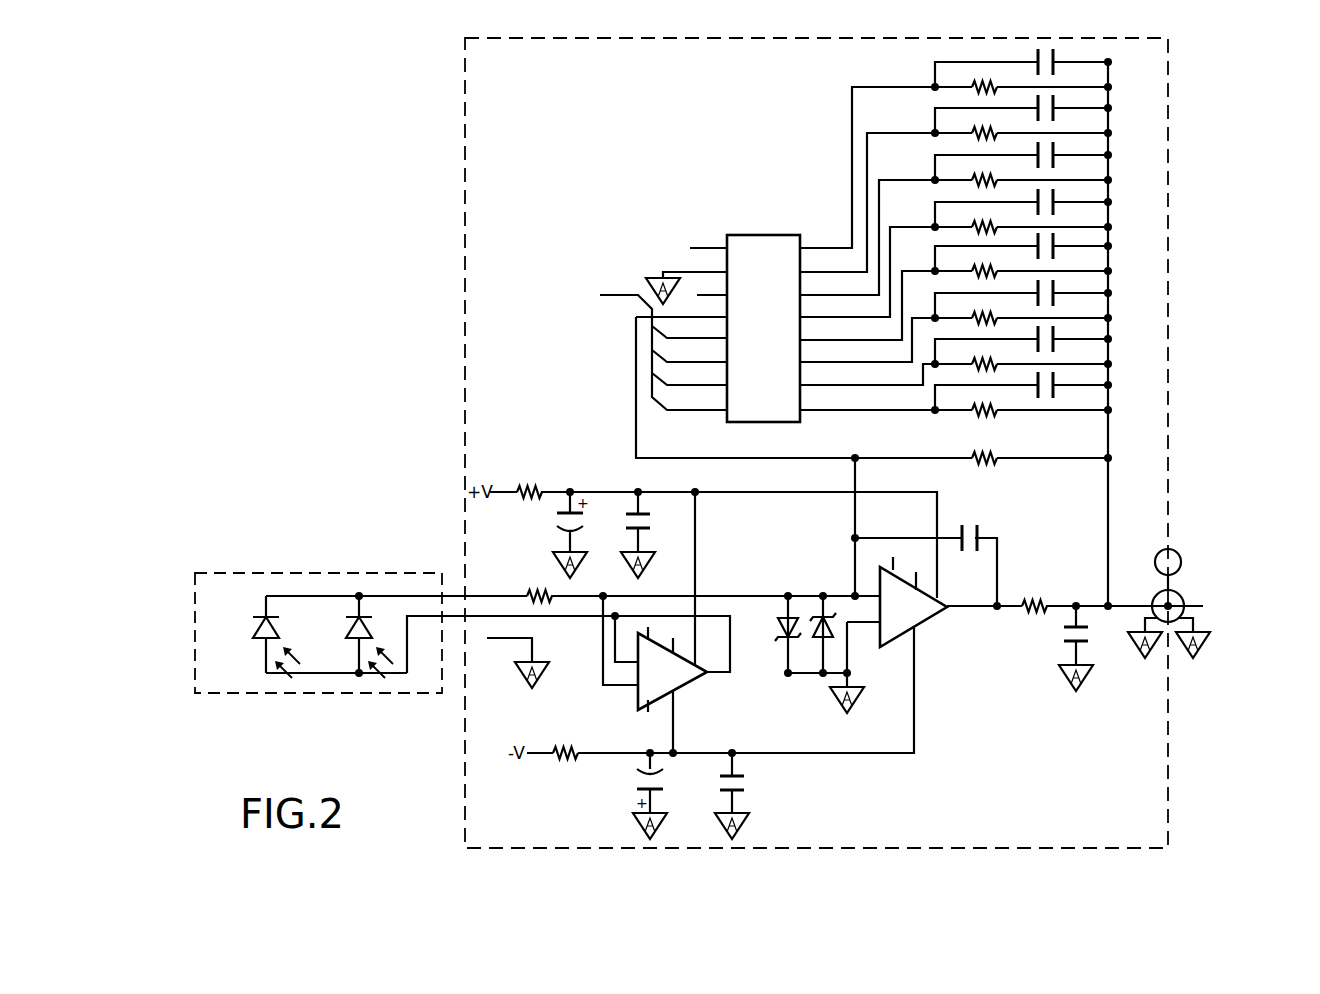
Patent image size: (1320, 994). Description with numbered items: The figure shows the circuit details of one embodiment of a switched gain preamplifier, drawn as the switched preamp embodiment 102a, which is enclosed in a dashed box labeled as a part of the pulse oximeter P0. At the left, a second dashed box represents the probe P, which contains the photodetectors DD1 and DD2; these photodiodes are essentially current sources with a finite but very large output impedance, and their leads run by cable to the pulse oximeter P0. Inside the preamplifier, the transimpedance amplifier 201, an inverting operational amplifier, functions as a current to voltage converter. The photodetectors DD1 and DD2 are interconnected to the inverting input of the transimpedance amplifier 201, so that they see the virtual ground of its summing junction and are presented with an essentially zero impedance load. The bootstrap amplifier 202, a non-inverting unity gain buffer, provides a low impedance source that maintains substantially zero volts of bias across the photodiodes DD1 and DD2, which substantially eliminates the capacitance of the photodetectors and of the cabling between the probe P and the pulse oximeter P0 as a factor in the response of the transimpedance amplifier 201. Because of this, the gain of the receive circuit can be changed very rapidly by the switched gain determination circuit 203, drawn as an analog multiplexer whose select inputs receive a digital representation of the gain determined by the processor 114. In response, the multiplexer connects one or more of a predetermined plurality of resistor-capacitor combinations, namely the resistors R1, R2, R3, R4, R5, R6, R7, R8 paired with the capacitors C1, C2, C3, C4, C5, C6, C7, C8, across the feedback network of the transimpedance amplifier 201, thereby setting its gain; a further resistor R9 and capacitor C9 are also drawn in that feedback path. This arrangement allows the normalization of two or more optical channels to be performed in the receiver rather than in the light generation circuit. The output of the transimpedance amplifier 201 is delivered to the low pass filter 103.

The switched preamp embodiment 102a is at (541, 79).
The pulse oximeter P0 is at (465, 115).
The switched gain determination circuit 203 is at (765, 224).
The processor 114 is at (535, 297).
The transimpedance amplifier 201 is at (934, 613).
The bootstrap amplifier 202 is at (638, 700).
The low pass filter 103 is at (1205, 603).
The probe P is at (283, 573).
The photodetector DD1 is at (352, 632).
The photodetector DD2 is at (262, 631).
The resistor R1 is at (1021, 402).
The resistor R2 is at (1021, 356).
The resistor R3 is at (1021, 310).
The resistor R4 is at (1021, 263).
The resistor R5 is at (1021, 219).
The resistor R6 is at (1021, 172).
The resistor R7 is at (1021, 125).
The resistor R8 is at (1021, 79).
The resistor R9 is at (874, 390).
The capacitor C1 is at (1023, 387).
The capacitor C2 is at (1023, 341).
The capacitor C3 is at (1023, 295).
The capacitor C4 is at (1023, 248).
The capacitor C5 is at (1023, 204).
The capacitor C6 is at (1023, 157).
The capacitor C7 is at (1023, 110).
The capacitor C8 is at (1023, 64).
The capacitor C9 is at (984, 532).